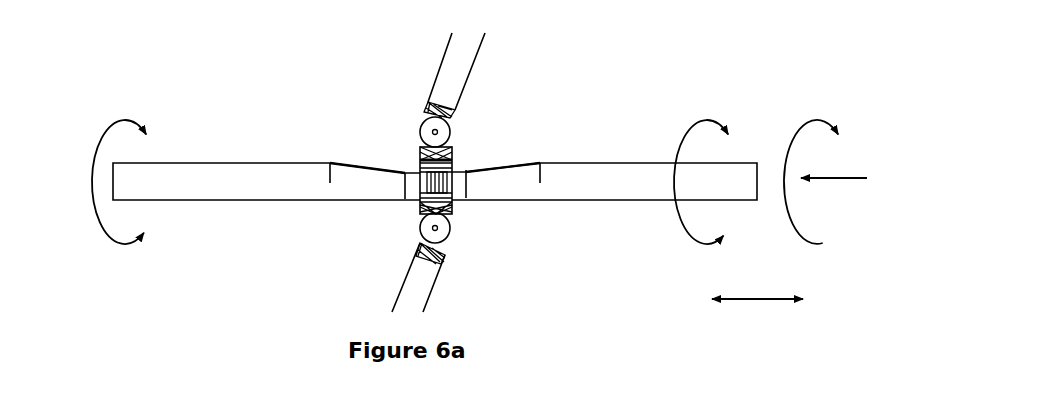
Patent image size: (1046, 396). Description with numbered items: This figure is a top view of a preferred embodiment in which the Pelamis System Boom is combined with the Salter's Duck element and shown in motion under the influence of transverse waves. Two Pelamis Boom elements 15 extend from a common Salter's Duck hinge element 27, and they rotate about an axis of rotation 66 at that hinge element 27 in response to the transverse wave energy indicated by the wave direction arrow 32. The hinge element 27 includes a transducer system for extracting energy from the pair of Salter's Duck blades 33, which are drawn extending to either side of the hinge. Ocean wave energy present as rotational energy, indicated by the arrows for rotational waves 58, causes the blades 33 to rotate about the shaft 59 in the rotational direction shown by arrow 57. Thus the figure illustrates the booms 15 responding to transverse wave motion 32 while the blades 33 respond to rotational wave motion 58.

The Pelamis Boom elements 15 is at (470, 63).
The axis of rotation 66 is at (438, 132).
The Salter's Duck blades 33 is at (218, 168).
The Salter's Duck hinge element 27 is at (412, 210).
The rotational waves 58 is at (98, 230).
The rotational direction arrow 57 is at (797, 235).
The shaft 59 is at (838, 180).
The transverse wave direction 32 is at (740, 300).